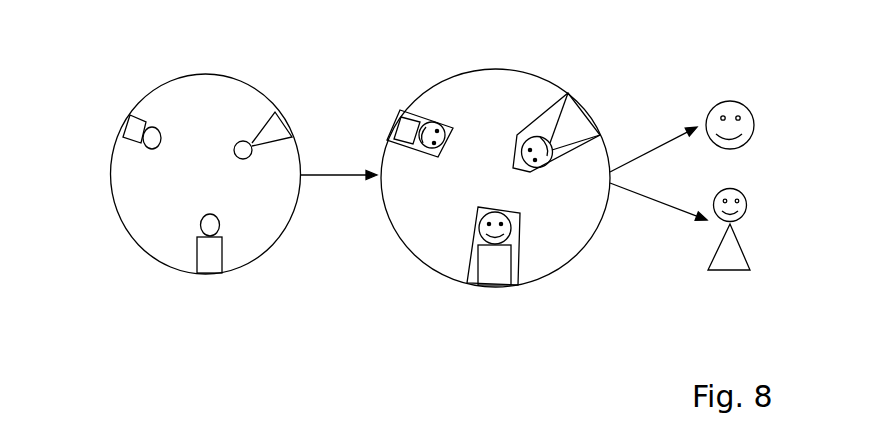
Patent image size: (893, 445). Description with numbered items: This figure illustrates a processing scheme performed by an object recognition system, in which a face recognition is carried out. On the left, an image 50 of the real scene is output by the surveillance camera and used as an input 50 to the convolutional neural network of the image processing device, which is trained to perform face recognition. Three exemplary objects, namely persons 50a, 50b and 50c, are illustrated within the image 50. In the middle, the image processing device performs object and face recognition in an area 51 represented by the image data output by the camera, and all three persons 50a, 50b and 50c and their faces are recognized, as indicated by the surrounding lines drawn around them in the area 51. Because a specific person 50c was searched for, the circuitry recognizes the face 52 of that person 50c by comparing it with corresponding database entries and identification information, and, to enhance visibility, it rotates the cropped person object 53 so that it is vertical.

The image 50 is at (188, 74).
The person 50a is at (124, 163).
The person 50b is at (174, 240).
The person 50c is at (248, 122).
The area 51 is at (488, 68).
The face 52 is at (722, 100).
The person object 53 is at (748, 207).